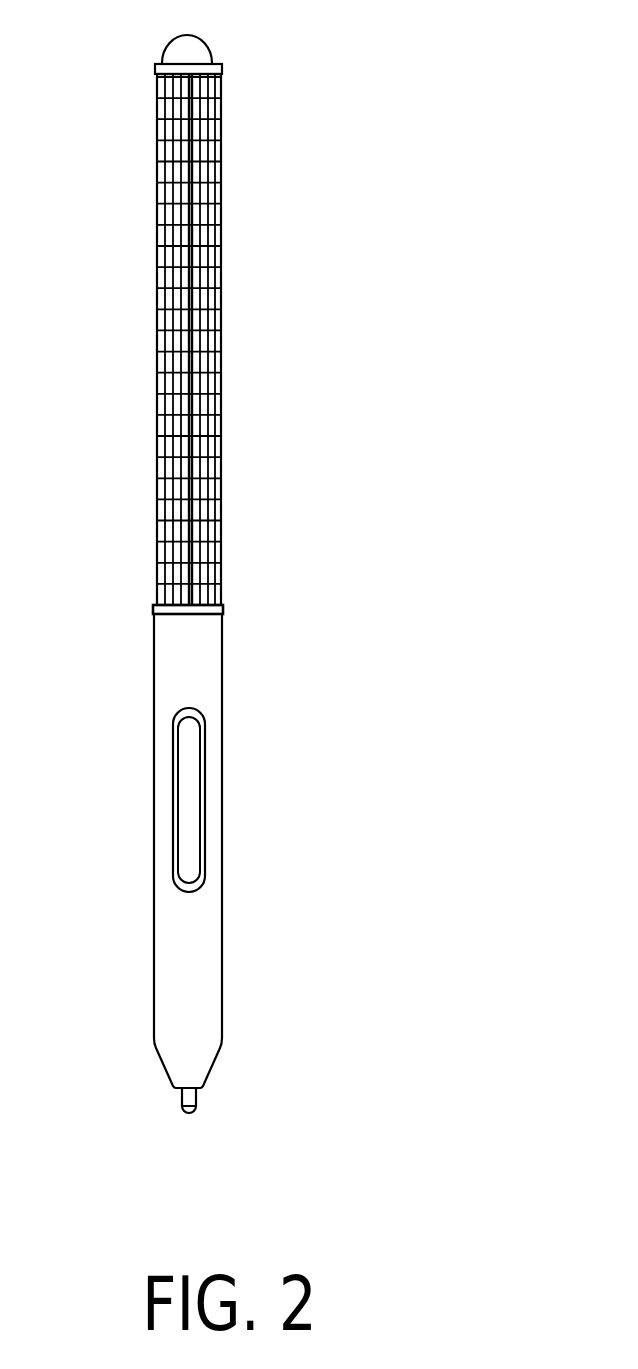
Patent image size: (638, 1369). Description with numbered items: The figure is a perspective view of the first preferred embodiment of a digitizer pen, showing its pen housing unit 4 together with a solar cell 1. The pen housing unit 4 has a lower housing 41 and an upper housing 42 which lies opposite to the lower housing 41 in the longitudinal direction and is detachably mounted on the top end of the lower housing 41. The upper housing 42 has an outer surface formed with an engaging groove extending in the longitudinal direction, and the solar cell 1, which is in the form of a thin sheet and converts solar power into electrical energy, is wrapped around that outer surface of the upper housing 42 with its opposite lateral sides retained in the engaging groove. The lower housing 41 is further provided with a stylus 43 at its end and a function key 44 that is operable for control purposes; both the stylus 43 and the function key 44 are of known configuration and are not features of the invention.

The pen housing unit 4 is at (377, 30).
The lower housing 41 is at (228, 732).
The upper housing 42 is at (222, 64).
The stylus 43 is at (193, 1102).
The function key 44 is at (188, 813).
The solar cell 1 is at (217, 147).